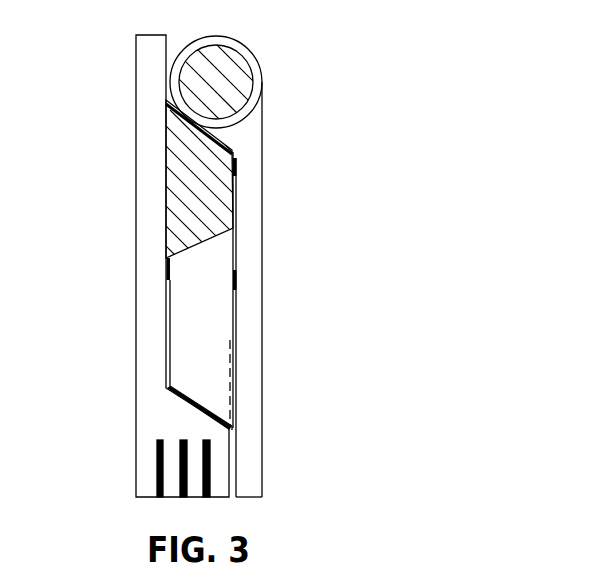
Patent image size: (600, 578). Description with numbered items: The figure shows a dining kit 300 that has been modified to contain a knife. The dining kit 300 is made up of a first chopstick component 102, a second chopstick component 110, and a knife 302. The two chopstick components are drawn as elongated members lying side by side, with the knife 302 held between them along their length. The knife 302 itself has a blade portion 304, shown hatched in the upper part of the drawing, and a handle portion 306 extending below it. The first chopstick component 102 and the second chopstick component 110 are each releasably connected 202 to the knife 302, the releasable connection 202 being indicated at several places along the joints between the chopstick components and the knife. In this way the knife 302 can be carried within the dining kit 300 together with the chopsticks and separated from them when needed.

The dining kit 300 is at (380, 96).
The first chopstick component 102 is at (147, 250).
The second chopstick component 110 is at (250, 256).
The releasable connection 202 is at (237, 170).
The knife 302 is at (230, 336).
The blade portion 304 is at (216, 215).
The handle portion 306 is at (230, 318).